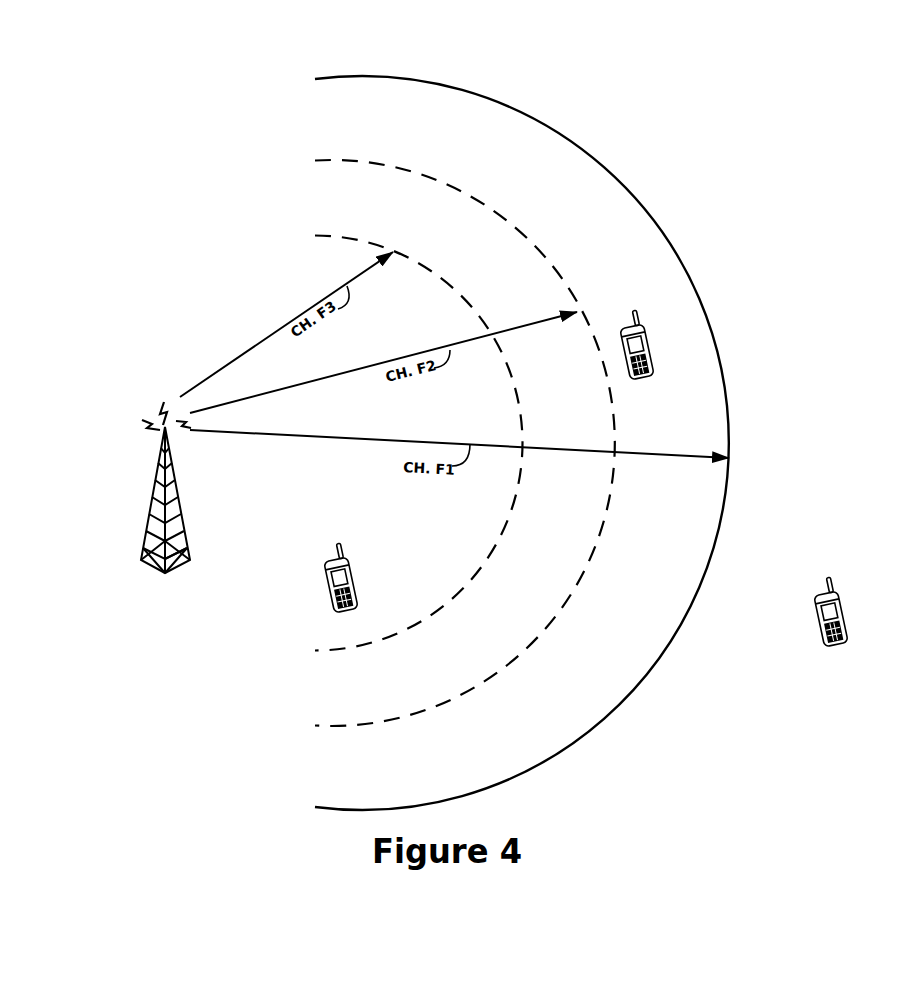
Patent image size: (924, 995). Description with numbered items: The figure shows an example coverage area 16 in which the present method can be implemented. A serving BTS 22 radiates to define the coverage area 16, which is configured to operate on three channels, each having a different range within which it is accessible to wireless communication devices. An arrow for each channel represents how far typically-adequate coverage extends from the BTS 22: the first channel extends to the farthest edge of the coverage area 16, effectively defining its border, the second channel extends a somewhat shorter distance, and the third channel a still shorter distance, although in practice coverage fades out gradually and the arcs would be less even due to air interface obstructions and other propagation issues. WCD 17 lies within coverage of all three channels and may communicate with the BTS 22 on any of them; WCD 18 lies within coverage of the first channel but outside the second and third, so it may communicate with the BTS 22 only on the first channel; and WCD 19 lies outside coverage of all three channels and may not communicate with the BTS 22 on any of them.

The coverage area 16 is at (776, 92).
The WCD 17 is at (350, 569).
The WCD 18 is at (646, 336).
The WCD 19 is at (840, 603).
The serving BTS 22 is at (186, 525).